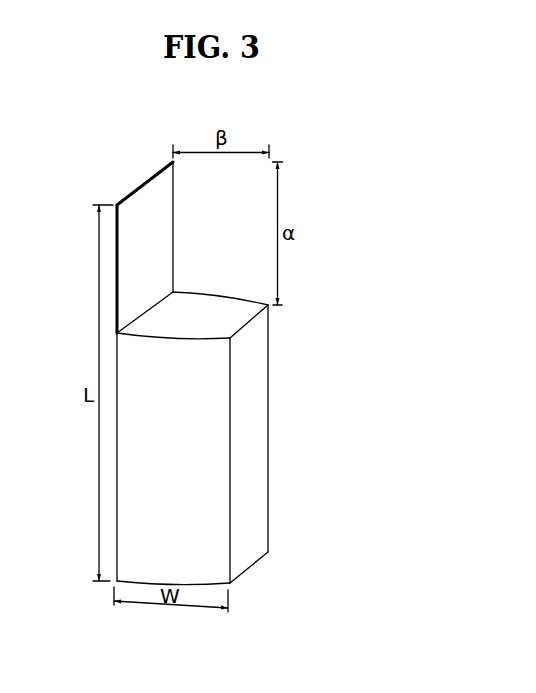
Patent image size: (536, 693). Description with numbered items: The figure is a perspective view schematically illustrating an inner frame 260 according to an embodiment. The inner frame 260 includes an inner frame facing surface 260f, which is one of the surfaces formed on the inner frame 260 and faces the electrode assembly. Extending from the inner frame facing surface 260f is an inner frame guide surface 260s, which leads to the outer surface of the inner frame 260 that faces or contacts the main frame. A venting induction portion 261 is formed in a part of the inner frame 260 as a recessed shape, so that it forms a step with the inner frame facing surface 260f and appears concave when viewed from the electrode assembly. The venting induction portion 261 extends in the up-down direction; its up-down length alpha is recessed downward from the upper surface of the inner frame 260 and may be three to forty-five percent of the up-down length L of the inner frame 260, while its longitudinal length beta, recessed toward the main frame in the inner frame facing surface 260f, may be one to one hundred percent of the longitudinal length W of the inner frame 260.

The inner frame 260 is at (118, 140).
The venting induction portion 261 is at (233, 237).
The inner frame facing surface 260f is at (252, 412).
The inner frame guide surface 260s is at (202, 485).